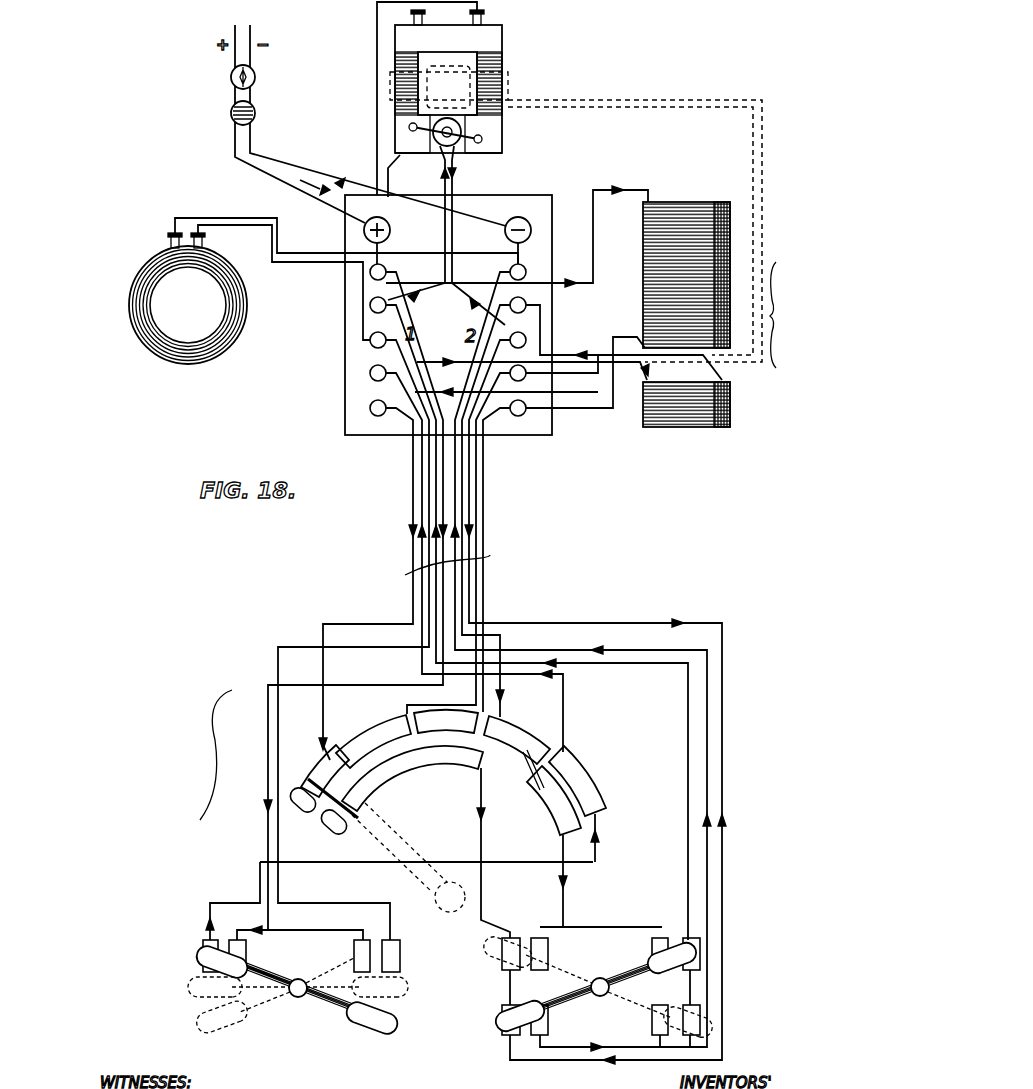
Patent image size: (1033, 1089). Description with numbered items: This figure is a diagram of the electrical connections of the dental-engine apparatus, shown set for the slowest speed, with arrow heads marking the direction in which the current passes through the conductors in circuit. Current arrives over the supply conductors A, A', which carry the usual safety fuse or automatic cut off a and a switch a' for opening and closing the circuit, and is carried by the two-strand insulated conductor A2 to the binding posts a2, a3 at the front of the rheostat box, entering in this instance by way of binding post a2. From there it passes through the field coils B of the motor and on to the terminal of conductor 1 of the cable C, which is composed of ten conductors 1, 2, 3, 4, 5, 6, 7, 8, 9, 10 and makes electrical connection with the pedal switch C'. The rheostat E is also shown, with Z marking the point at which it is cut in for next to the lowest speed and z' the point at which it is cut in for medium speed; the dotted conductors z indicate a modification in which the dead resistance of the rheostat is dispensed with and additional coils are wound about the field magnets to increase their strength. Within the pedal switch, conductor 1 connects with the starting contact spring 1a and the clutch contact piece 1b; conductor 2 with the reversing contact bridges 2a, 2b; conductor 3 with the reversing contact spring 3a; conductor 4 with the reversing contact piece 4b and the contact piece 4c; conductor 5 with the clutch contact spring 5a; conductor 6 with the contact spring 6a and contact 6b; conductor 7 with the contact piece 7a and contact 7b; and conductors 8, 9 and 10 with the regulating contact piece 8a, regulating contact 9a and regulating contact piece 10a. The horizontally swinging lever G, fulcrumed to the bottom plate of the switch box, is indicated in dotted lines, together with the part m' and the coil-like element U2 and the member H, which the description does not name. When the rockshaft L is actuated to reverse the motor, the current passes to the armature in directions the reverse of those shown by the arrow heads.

The conductor A is at (295, 114).
The conductor A' is at (378, 115).
The safety fuse or automatic cut off a is at (254, 113).
The switch a' is at (255, 77).
The two-strand insulated conductor A2 is at (317, 174).
The binding post a2 is at (364, 225).
The binding post a3 is at (520, 220).
The field coils B is at (400, 63).
The dotted-line conductors z is at (642, 231).
The coil U2 is at (323, 291).
The conductor 1 is at (262, 835).
The conductor 2 is at (566, 1072).
The conductor 3 is at (688, 725).
The conductor 4 is at (500, 707).
The conductor 5 is at (278, 835).
The conductor 6 is at (735, 738).
The conductor 7 is at (252, 888).
The conductor 8 is at (395, 703).
The conductor 9 is at (323, 703).
The conductor 10 is at (485, 522).
The rheostat cut-in point Z is at (672, 275).
The rheostat cut-in point z' is at (673, 372).
The rheostat E is at (787, 315).
The cable C is at (458, 556).
The pedal switch C' is at (196, 755).
The regulating contact 9a is at (325, 771).
The regulating contact piece 8a is at (373, 741).
The regulating contact piece 10a is at (446, 721).
The contact piece 4c is at (517, 753).
The contact 7b is at (577, 804).
The contact 6b is at (426, 842).
The brush m' is at (319, 796).
The horizontally swinging lever G is at (435, 912).
The contact piece 7a is at (202, 955).
The starting contact spring 1a is at (246, 950).
The clutch contact piece 1b is at (354, 950).
The clutch contact spring 5a is at (400, 950).
The rotary switch H is at (298, 997).
The contact spring 6a is at (502, 980).
The reversing contact piece 4b is at (548, 952).
The reversing contact spring 3a is at (700, 985).
The reversing contact bridge 2a is at (548, 1025).
The reversing contact bridge 2b is at (652, 1025).
The rockshaft L is at (600, 996).